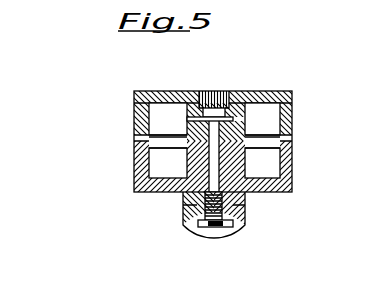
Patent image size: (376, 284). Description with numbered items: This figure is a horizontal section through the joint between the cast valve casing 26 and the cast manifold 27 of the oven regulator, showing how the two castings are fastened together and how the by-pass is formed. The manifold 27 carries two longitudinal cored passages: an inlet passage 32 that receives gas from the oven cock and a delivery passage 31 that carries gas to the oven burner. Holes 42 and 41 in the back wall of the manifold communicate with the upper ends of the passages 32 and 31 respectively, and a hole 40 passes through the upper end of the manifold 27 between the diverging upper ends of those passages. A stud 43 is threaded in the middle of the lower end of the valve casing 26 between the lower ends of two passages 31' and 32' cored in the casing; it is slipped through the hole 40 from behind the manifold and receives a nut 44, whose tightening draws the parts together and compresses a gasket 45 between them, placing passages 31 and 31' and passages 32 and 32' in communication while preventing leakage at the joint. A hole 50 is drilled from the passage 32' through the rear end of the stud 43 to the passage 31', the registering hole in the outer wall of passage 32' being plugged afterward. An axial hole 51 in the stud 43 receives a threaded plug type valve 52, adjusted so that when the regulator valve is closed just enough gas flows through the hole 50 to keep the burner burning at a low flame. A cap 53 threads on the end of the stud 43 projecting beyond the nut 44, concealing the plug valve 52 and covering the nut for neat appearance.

The valve casing 26 is at (293, 102).
The manifold 27 is at (293, 171).
The hole 40 is at (172, 181).
The passage 32' is at (168, 96).
The longitudinal passage 32 is at (141, 171).
The passage 31' is at (268, 96).
The longitudinal passage 31 is at (279, 183).
The hole 42 is at (158, 140).
The hole 41 is at (274, 142).
The gasket 45 is at (281, 135).
The stud 43 is at (214, 92).
The hole 50 is at (233, 119).
The axial hole 51 is at (232, 163).
The cap 53 is at (188, 220).
The nut 44 is at (247, 205).
The plug type valve 52 is at (210, 228).